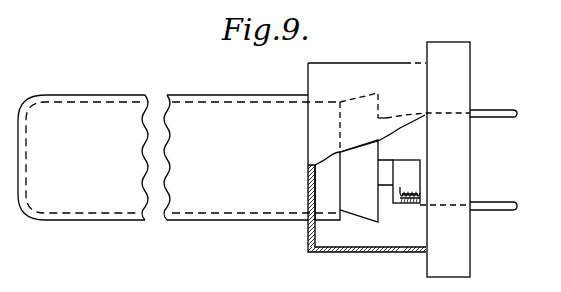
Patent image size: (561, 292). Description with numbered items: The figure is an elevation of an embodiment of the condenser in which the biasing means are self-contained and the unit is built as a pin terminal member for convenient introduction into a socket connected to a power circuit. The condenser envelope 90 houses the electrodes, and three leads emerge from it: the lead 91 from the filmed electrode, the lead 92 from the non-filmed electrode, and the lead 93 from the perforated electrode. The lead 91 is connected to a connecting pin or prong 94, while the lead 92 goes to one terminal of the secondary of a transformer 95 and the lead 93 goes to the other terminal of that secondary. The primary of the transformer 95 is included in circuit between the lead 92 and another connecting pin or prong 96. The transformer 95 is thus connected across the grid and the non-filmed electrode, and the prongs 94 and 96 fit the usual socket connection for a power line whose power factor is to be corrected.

The condenser envelope 90 is at (210, 203).
The lead from filmed electrode 91 is at (388, 118).
The lead from non-filmed electrode 92 is at (395, 158).
The lead from perforated electrode 93 is at (388, 190).
The connecting pin or prong 94 is at (489, 108).
The transformer 95 is at (422, 193).
The connecting pin or prong 96 is at (495, 212).